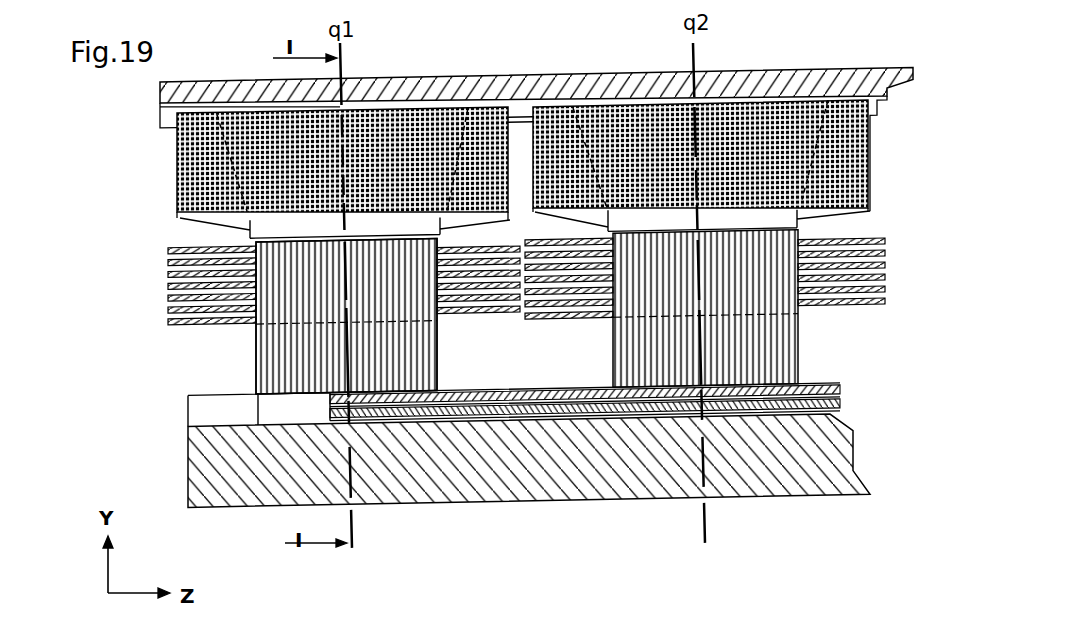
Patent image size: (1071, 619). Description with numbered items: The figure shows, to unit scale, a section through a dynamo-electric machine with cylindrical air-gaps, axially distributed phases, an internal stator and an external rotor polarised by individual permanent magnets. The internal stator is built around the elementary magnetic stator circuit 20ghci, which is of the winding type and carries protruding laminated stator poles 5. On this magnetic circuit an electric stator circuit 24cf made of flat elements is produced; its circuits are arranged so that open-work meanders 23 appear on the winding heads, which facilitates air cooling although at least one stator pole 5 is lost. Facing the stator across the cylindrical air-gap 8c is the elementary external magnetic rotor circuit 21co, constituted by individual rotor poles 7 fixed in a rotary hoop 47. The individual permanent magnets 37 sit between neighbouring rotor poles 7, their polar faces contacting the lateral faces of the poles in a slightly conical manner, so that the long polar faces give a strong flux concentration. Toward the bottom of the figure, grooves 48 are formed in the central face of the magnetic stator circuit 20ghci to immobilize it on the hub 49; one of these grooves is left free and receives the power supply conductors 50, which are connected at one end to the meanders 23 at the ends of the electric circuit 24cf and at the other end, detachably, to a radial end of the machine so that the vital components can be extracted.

The rotary hoop 47 is at (163, 98).
The elementary external magnetic rotor circuit 21co is at (168, 167).
The individual permanent magnet 37 is at (190, 192).
The protruding rotor pole 7 is at (273, 228).
The cylindrical air-gap 8c is at (830, 226).
The laminated stator pole 5 is at (317, 256).
The elementary magnetic stator circuit of winding type 20ghci is at (243, 378).
The open-work meanders 23 is at (170, 318).
The electric stator circuit 24cf is at (864, 316).
The groove 48 is at (273, 412).
The hub 49 is at (207, 456).
The power supply conductors 50 is at (833, 392).